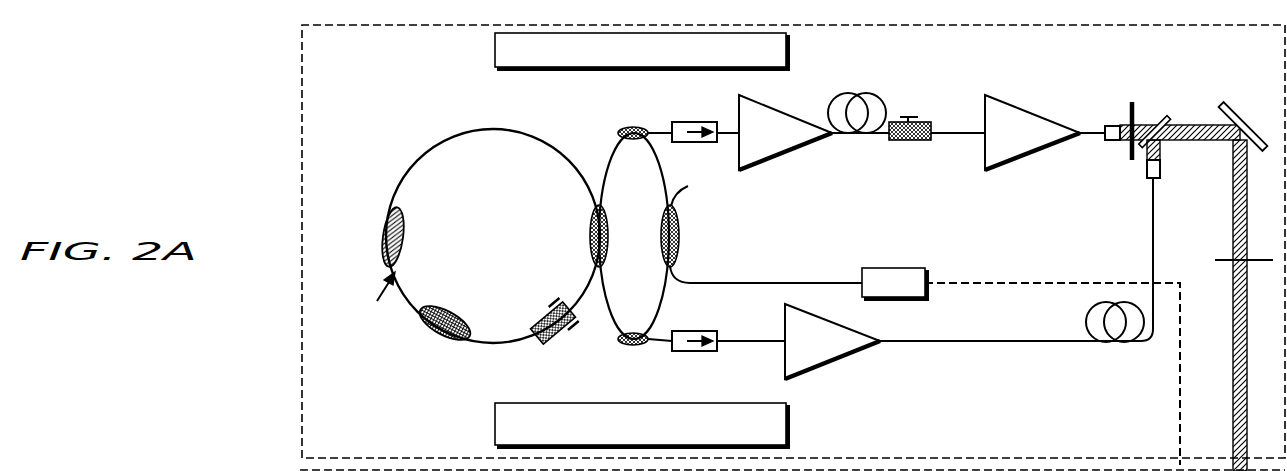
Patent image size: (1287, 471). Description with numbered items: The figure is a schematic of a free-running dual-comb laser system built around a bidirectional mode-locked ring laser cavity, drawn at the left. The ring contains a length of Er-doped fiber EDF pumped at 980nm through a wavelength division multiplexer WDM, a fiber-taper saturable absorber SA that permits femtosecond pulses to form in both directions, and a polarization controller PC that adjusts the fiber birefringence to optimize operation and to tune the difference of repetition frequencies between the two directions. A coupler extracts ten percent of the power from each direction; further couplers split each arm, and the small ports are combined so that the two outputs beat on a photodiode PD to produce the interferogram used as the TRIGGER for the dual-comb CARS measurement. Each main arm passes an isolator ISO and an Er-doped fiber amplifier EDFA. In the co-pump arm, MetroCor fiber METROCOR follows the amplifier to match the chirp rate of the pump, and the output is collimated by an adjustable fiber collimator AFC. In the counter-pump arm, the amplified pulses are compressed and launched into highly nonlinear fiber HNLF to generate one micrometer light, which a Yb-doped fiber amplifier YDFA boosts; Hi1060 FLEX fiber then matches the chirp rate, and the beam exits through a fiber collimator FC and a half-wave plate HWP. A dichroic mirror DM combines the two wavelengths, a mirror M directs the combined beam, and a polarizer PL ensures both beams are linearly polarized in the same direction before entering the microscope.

The Er-doped fiber EDF is at (493, 236).
The wavelength division multiplexer WDM is at (364, 237).
The 980 nm pump 980nm is at (351, 298).
The saturable absorber SA is at (437, 326).
The polarization controller PC is at (724, 232).
The isolator ISO is at (779, 238).
The Er-doped fiber amplifier EDFA is at (809, 237).
The highly nonlinear fiber HNLF is at (952, 100).
The Yb-doped fiber amplifier YDFA is at (1032, 132).
The fiber collimator FC is at (1106, 119).
The Hi1060-flex fiber Hi1060 FLEX is at (1093, 172).
The half-wave plate HWP is at (1132, 114).
The dichroic mirror DM is at (1165, 119).
The adjustable fiber collimator AFC is at (1178, 162).
The mirror M is at (1243, 126).
The polarizer PL is at (1230, 262).
The MetroCor fiber METROCOR is at (1104, 338).
The photodiode PD is at (894, 283).
The trigger signal TRIGGER is at (1052, 359).